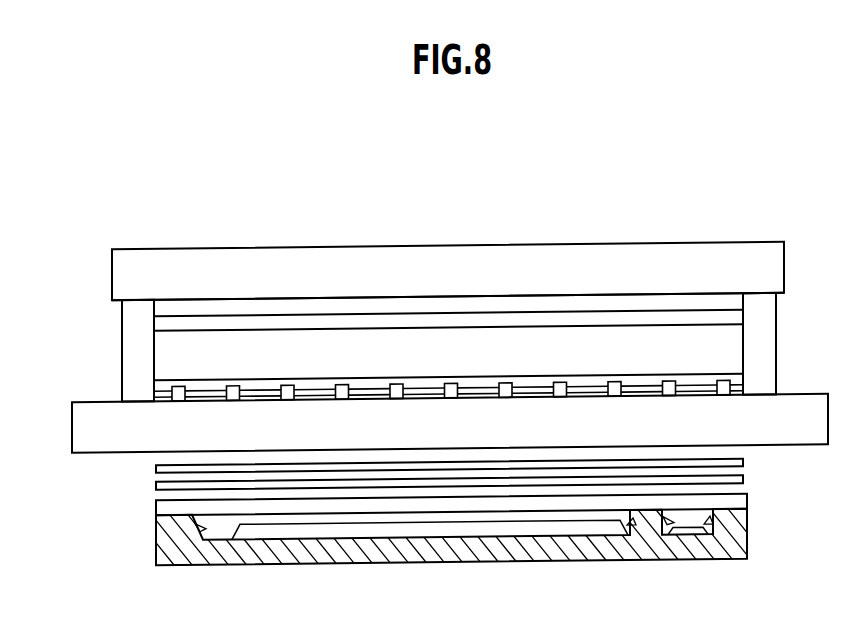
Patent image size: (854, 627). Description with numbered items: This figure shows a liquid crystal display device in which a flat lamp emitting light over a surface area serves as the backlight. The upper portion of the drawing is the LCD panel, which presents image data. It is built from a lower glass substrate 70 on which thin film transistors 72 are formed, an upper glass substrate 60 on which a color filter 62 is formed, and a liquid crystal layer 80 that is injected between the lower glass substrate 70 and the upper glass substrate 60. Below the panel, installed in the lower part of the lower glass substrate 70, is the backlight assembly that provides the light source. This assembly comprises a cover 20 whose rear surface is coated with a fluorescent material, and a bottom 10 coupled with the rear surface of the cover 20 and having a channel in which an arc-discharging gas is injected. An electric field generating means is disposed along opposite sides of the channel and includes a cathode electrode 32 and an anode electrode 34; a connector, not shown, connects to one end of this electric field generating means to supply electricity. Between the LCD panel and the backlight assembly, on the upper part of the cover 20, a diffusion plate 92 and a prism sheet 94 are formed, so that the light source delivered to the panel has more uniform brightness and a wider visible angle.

The bottom 10 is at (748, 533).
The cover 20 is at (156, 502).
The cathode electrode 32 is at (660, 535).
The anode electrode 34 is at (717, 535).
The upper glass substrate 60 is at (432, 262).
The color filter 62 is at (624, 304).
The lower glass substrate 70 is at (83, 425).
The thin film transistors 72 is at (693, 392).
The liquid crystal layer 80 is at (733, 342).
The diffusion plate 92 is at (745, 482).
The prism sheet 94 is at (745, 466).